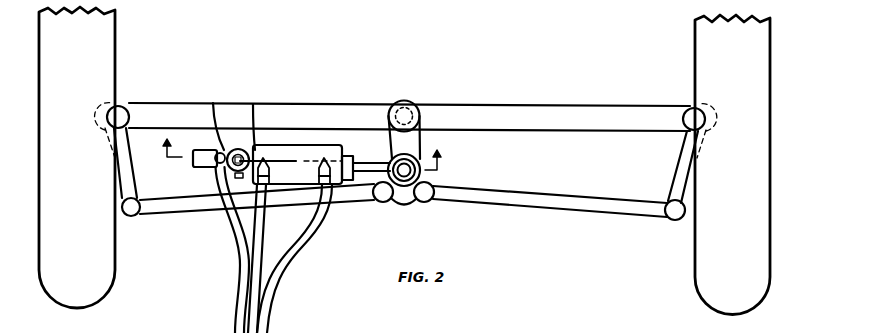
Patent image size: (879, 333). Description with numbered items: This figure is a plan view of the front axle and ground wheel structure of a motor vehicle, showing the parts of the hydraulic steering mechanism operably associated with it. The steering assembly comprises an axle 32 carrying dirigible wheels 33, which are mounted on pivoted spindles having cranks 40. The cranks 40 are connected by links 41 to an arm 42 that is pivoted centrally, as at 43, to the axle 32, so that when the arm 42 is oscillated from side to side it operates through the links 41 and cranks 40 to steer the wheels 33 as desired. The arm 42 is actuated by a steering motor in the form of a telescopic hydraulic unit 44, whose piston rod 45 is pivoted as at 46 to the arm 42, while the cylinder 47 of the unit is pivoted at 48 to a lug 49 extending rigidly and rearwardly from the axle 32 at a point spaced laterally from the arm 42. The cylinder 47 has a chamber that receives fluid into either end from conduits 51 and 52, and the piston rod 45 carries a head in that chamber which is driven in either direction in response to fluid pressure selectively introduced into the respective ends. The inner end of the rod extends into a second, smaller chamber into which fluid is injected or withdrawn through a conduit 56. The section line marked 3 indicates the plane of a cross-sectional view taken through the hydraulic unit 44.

The axle 32 is at (570, 113).
The wheels 33 is at (102, 37).
The cranks 40 is at (125, 183).
The links 41 is at (195, 203).
The arm 42 is at (410, 138).
The pivot 43 is at (403, 110).
The telescopic hydraulic unit 44 is at (297, 147).
The piston rod 45 is at (368, 167).
The pivot 46 is at (405, 176).
The cylinder 47 is at (305, 173).
The pivot 48 is at (218, 171).
The lug 49 is at (242, 113).
The conduit 51 is at (305, 248).
The conduit 52 is at (262, 243).
The conduit 56 is at (240, 258).
The section line 3- 3 is at (305, 161).